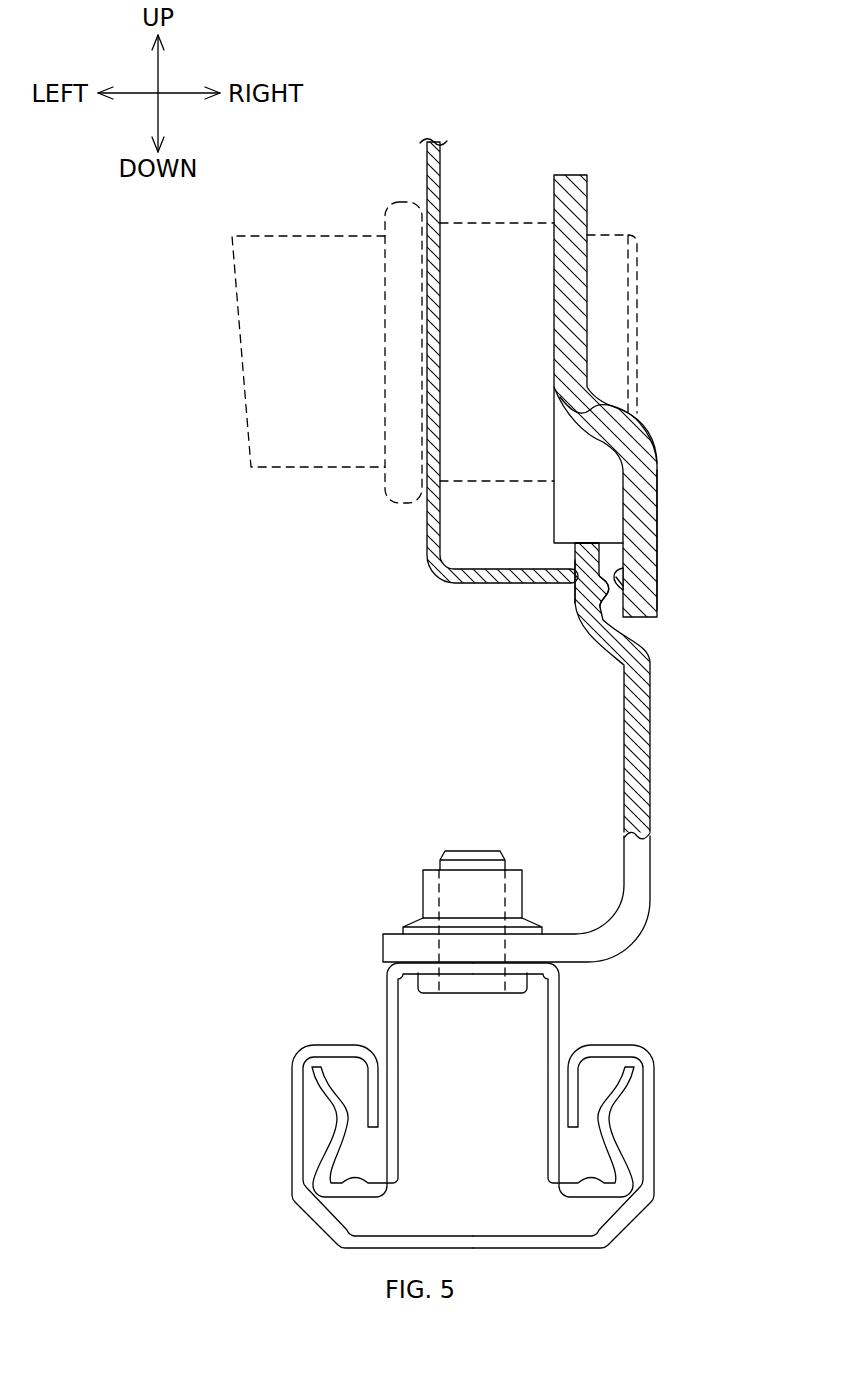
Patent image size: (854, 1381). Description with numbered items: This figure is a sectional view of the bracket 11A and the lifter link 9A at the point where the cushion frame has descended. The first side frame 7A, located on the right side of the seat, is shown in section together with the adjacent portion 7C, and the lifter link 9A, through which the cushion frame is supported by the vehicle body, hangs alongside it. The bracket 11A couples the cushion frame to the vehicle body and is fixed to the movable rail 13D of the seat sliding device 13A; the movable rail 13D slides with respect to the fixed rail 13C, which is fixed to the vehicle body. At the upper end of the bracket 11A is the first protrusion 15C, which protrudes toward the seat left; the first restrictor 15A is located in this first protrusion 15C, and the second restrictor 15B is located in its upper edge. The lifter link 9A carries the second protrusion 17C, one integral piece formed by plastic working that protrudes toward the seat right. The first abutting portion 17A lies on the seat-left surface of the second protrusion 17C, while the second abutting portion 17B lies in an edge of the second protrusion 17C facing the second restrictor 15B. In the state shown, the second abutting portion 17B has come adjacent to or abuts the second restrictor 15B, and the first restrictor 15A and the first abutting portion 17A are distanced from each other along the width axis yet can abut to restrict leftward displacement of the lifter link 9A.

The first side frame 7A is at (440, 182).
The trim member portion 7C is at (323, 236).
The lifter link 9A is at (589, 312).
The bracket 11A is at (652, 865).
The seat sliding device 13A is at (448, 1101).
The fixed rail 13C is at (292, 1190).
The movable rail 13D is at (385, 1007).
The first restrictor 15A is at (572, 603).
The second restrictor 15B is at (592, 543).
The first protrusion 15C is at (573, 588).
The first abutting portion 17A is at (655, 602).
The second abutting portion 17B is at (652, 603).
The second protrusion 17C is at (657, 517).